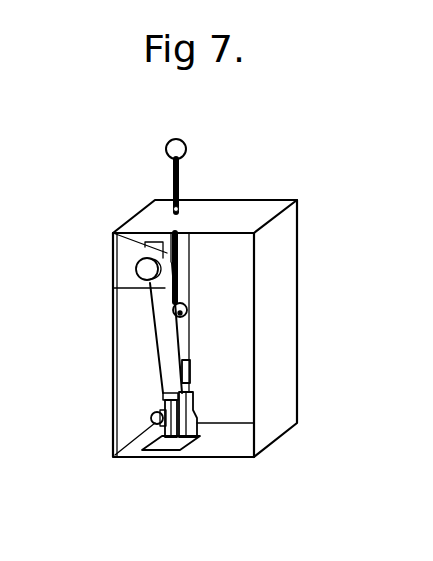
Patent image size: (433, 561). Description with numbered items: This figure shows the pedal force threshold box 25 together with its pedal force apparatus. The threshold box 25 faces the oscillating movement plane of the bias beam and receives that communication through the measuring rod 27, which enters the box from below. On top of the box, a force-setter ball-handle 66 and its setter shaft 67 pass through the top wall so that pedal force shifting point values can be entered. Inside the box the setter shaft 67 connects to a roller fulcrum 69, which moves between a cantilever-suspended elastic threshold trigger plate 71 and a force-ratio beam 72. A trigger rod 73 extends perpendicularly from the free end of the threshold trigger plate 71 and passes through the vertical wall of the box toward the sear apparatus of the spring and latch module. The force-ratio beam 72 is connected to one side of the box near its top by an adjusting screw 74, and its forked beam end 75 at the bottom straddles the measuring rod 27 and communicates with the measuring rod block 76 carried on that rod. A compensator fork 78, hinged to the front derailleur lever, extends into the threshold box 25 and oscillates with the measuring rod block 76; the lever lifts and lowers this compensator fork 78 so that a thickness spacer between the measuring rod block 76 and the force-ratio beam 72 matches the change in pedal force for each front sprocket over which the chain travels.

The pedal force threshold box 25 is at (130, 218).
The force-setter ball-handle 66 is at (163, 138).
The setter shaft 67 is at (171, 165).
The roller fulcrum 69 is at (188, 310).
The threshold trigger plate 71 is at (196, 345).
The force-ratio beam 72 is at (152, 308).
The trigger rod 73 is at (191, 374).
The adjusting screw 74 is at (135, 270).
The measuring rod 27 is at (162, 396).
The forked beam end 75 is at (185, 440).
The measuring rod block 76 is at (150, 420).
The compensator fork 78 is at (162, 437).